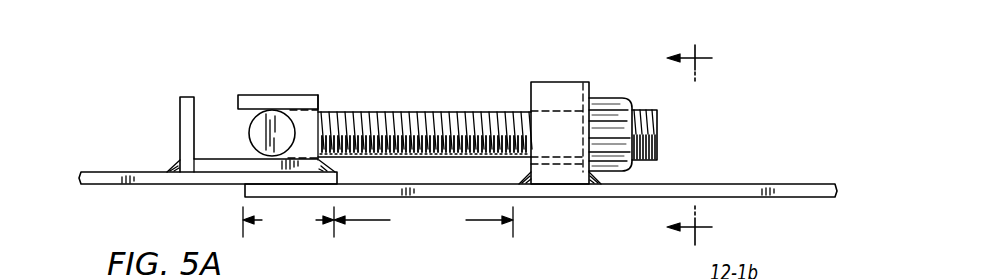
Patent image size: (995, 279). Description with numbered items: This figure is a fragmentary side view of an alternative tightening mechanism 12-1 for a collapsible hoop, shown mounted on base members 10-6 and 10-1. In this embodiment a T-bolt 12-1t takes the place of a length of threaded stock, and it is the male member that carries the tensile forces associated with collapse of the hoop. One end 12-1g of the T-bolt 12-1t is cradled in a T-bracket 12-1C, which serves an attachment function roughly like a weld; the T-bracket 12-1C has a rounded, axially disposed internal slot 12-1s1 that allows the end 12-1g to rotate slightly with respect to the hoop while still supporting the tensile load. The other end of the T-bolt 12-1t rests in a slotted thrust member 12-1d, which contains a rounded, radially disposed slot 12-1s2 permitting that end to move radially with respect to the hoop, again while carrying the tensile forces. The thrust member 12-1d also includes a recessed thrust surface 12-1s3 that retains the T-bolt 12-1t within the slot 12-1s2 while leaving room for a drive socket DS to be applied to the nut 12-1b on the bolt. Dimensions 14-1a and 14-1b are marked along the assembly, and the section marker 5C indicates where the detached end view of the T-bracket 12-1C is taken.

The first base plate 10-6 is at (102, 172).
The second base plate 10-1 is at (762, 185).
The clip assembly 12-1 is at (358, 70).
The internal slot 12-1s1 is at (196, 158).
The T-bracket 12-1C is at (267, 95).
The end of T-bolt 12-1g is at (249, 131).
The T-bolt 12-1t is at (388, 112).
The recessed thrust surface 12-1s3 is at (578, 100).
The radially disposed slot 12-1s2 is at (563, 166).
The slotted thrust member 12-1d is at (598, 93).
The drive surface of nut DS is at (608, 105).
The nut 12-1b is at (628, 166).
The dimension 14-1b is at (288, 222).
The dimension 14-1a is at (423, 222).
The section line 5C is at (675, 143).